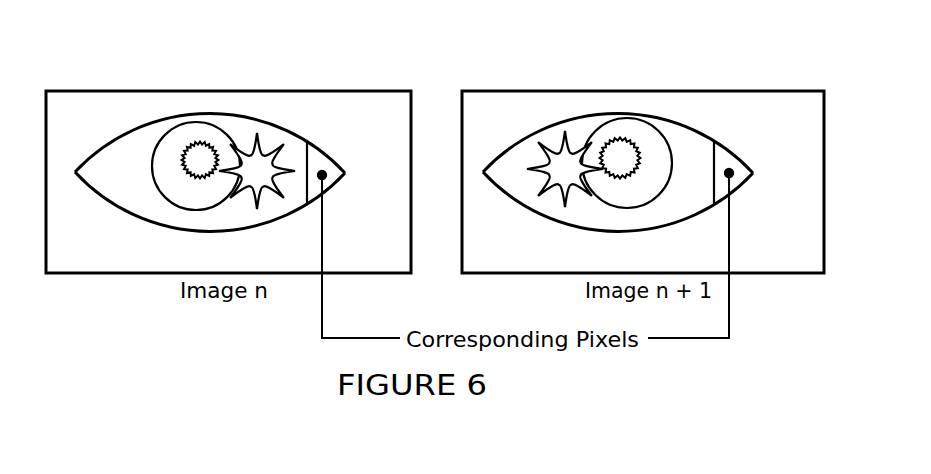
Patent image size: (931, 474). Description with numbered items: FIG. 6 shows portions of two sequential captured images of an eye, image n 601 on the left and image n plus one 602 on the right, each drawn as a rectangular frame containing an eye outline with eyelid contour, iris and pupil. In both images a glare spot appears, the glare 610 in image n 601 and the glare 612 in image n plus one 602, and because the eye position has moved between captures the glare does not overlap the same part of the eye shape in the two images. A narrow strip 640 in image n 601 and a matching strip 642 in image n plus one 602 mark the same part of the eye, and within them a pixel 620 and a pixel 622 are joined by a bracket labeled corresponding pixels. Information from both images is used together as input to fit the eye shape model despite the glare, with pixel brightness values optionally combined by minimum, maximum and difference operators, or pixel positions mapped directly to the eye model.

The image n 601 is at (231, 147).
The image n+1 602 is at (643, 147).
The glint feature in image n 610 is at (267, 150).
The glint feature in image n+1 612 is at (557, 150).
The pixel column/region in image n 640 is at (325, 148).
The pixel column/region in image n+1 642 is at (733, 148).
The pixel in image n 620 is at (332, 188).
The corresponding pixel in image n+1 622 is at (739, 186).